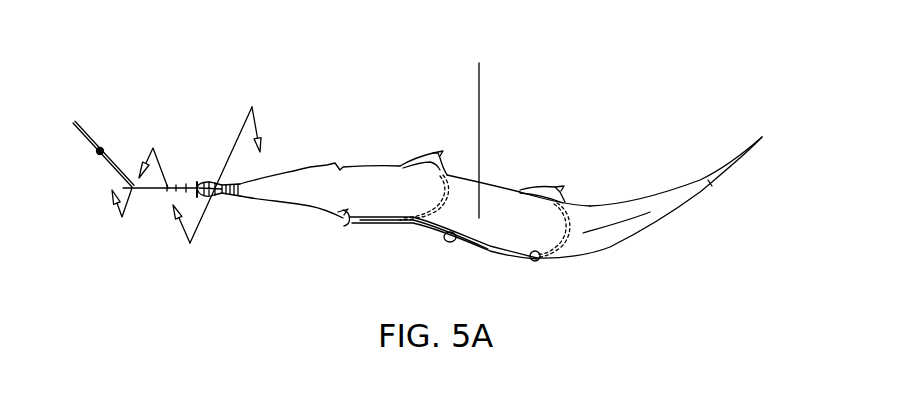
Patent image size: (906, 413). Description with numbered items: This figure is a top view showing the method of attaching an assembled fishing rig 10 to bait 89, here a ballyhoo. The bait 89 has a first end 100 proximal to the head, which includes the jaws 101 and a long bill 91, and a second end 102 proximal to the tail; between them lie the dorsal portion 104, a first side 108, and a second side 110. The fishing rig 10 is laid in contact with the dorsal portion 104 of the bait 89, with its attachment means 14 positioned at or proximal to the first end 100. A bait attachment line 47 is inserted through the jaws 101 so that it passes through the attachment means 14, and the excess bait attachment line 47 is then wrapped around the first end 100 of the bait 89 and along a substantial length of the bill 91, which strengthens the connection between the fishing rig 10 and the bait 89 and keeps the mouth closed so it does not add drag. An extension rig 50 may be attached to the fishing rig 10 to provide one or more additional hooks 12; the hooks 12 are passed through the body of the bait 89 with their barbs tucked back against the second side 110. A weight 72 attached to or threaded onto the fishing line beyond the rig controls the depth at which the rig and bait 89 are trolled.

The fishing rig 10 is at (268, 203).
The hook 12 is at (410, 158).
The attachment means 14 is at (216, 182).
The bait attachment line 47 is at (154, 148).
The extension rig 50 is at (377, 226).
The weight 72 is at (101, 148).
The bait 89 is at (312, 167).
The bill 91 is at (150, 189).
The first end 100 is at (236, 197).
The jaws 101 is at (212, 192).
The second end 102 is at (685, 203).
The dorsal portion 104 is at (480, 129).
The first side 108 is at (560, 261).
The second side 110 is at (507, 187).